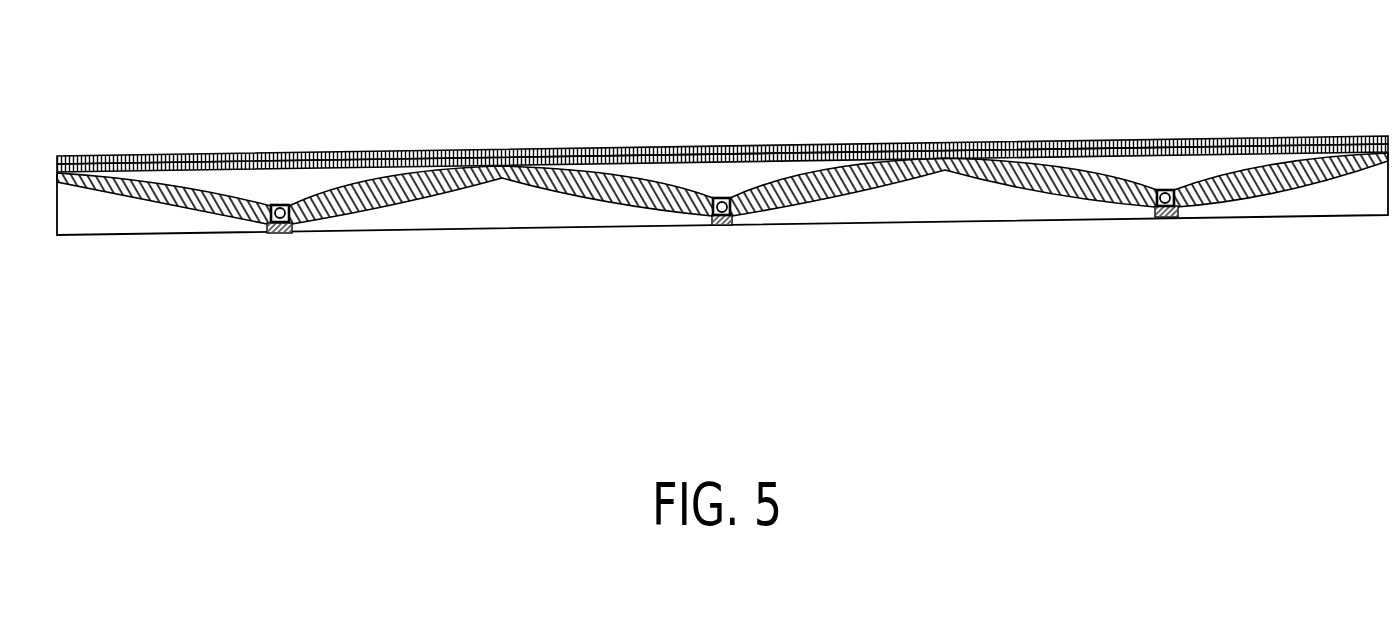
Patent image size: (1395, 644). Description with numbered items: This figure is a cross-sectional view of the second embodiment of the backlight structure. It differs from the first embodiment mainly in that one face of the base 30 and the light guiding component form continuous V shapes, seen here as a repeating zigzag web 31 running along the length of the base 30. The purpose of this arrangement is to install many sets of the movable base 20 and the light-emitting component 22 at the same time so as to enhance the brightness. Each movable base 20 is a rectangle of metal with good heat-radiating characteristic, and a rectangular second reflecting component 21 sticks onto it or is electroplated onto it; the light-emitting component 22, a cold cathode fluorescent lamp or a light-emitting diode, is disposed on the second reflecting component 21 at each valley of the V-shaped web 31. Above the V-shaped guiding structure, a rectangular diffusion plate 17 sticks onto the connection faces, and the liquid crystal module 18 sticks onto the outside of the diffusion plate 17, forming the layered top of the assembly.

The diffusion plate 17 is at (500, 160).
The liquid crystal module 18 is at (458, 157).
The movable base 20 is at (276, 233).
The second reflecting component 21 is at (268, 207).
The light-emitting component 22 is at (288, 234).
The base 30 is at (468, 216).
The corrugated web 31 is at (630, 187).